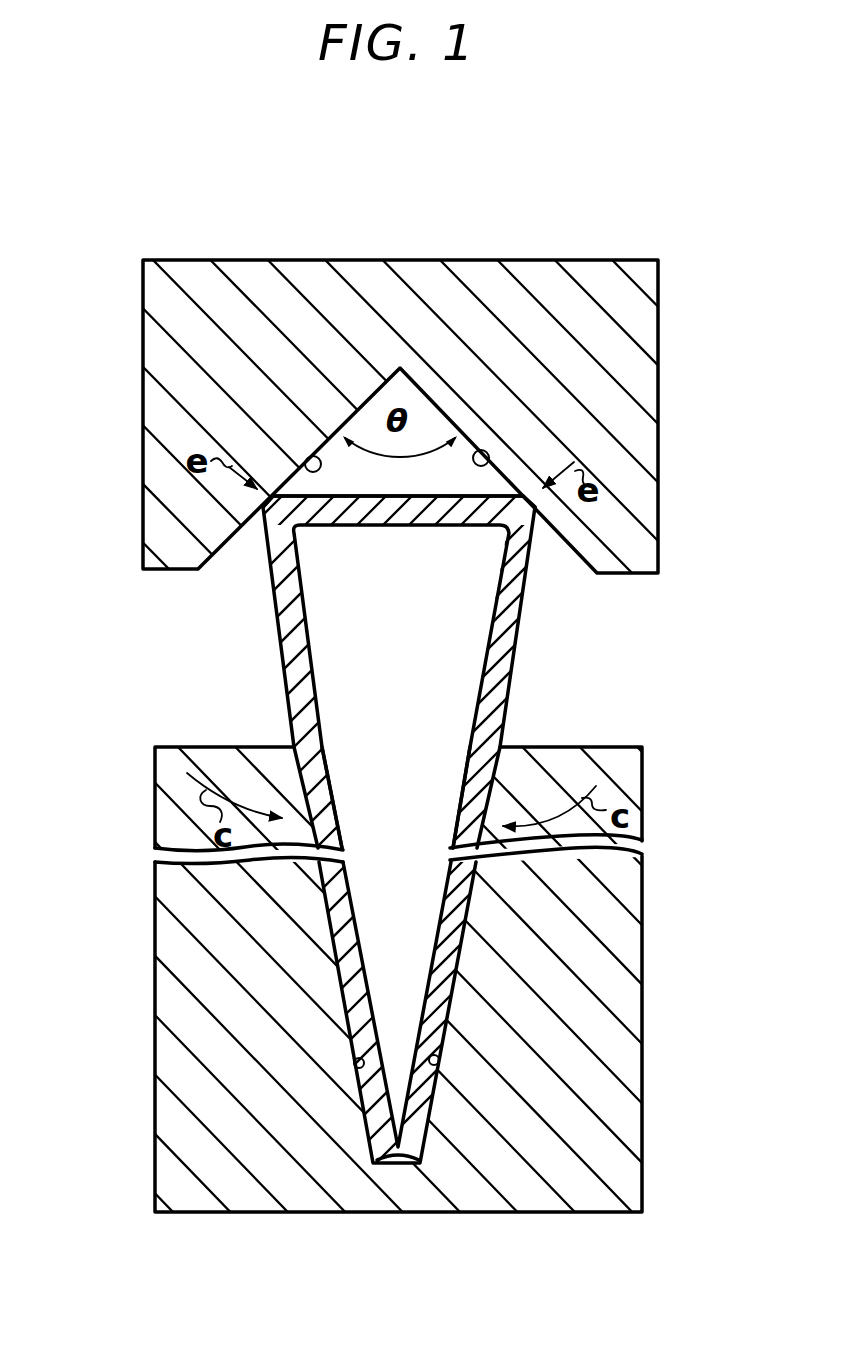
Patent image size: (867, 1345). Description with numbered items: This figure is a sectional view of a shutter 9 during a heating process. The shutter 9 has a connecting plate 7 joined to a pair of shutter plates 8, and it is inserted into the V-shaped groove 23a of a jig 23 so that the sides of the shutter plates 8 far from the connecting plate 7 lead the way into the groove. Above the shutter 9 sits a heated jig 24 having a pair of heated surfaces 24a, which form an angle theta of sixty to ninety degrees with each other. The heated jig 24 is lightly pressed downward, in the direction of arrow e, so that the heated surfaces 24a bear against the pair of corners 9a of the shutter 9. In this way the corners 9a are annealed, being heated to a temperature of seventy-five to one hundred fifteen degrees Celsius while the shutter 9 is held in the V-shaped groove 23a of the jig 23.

The connecting plate 7 is at (400, 527).
The shutter plates 8 is at (458, 818).
The shutter 9 is at (433, 825).
The corners 9a is at (262, 506).
The jig 23 is at (603, 914).
The V-shaped groove 23a is at (356, 1062).
The heated jig 24 is at (437, 272).
The heated surfaces 24a is at (305, 458).